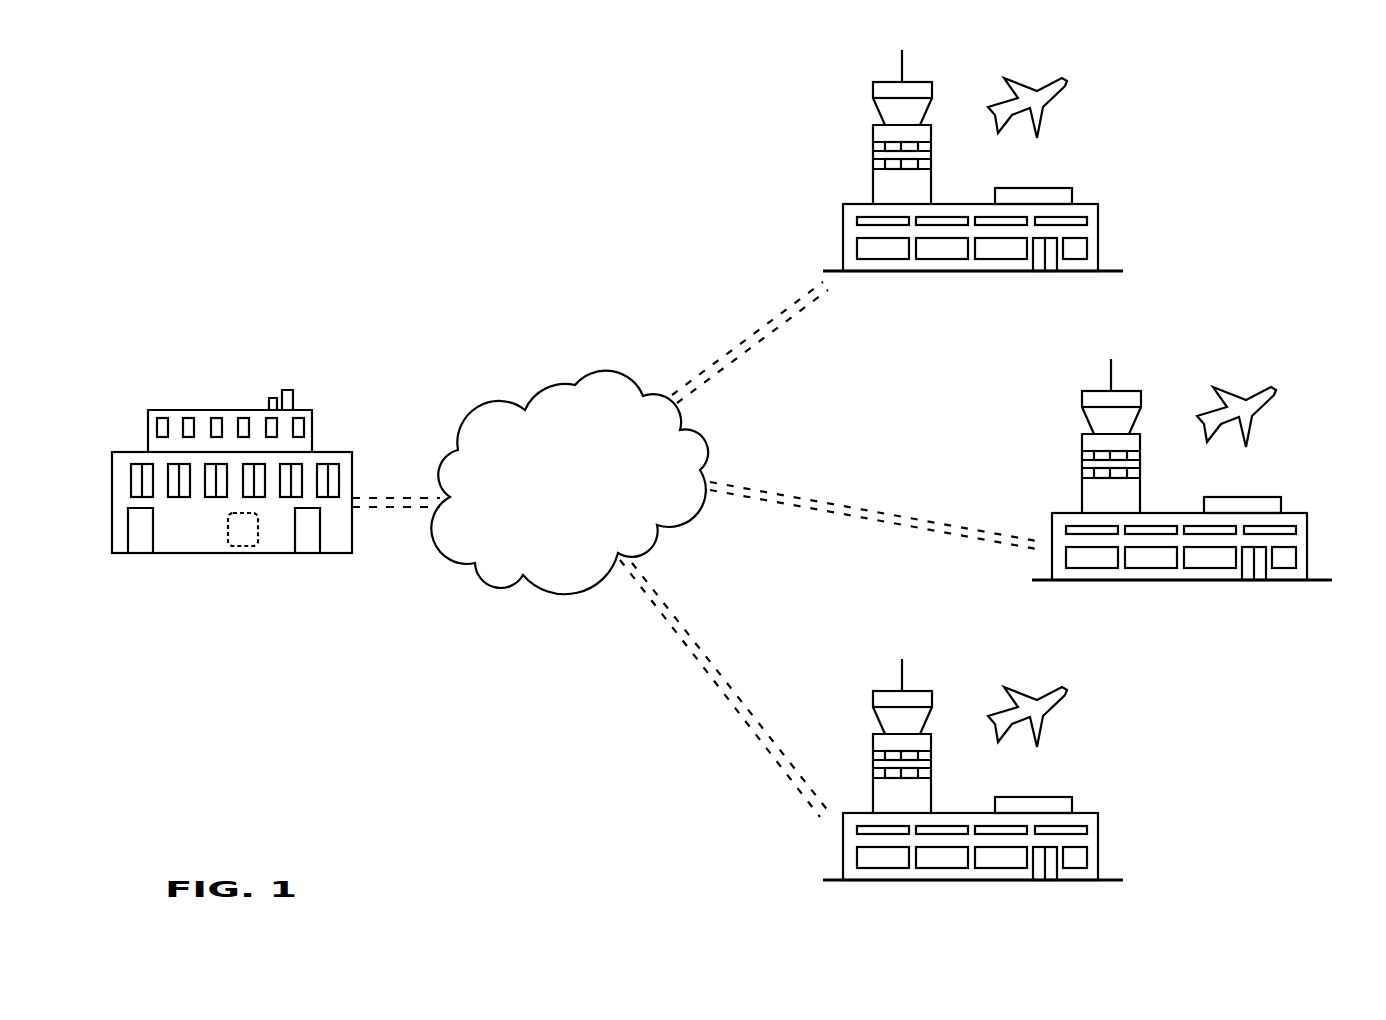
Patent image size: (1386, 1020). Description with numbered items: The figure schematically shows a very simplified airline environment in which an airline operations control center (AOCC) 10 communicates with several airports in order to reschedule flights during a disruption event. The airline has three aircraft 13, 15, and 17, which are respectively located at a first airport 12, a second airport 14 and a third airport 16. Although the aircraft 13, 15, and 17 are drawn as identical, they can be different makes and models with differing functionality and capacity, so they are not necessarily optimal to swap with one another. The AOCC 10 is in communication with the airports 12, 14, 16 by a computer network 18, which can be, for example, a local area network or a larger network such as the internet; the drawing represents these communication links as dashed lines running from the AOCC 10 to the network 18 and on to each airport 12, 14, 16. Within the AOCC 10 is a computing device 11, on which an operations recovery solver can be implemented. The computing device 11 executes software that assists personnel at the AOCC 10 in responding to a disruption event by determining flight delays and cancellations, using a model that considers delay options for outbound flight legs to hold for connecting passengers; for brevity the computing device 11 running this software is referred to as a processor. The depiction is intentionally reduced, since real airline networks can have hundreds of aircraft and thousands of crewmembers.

The airline operations control center 10 is at (182, 410).
The computing device 11 is at (233, 517).
The first airport 12 is at (872, 137).
The first aircraft 13 is at (1047, 98).
The second airport 14 is at (1160, 469).
The second aircraft 15 is at (1278, 417).
The third airport 16 is at (951, 769).
The third aircraft 17 is at (1069, 717).
The computer network 18 is at (557, 382).